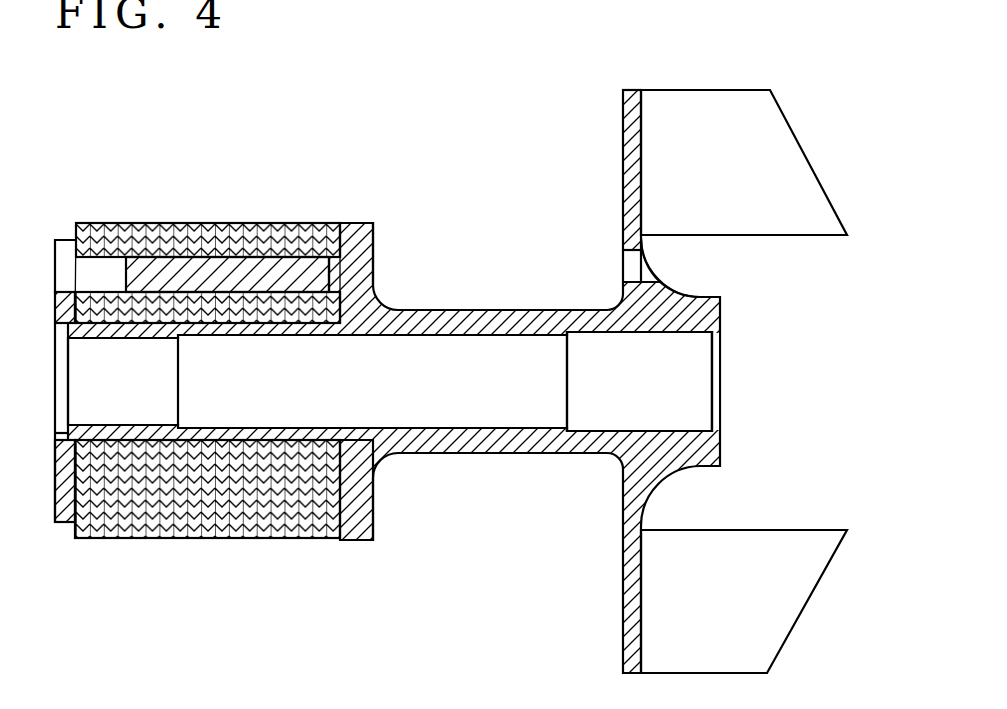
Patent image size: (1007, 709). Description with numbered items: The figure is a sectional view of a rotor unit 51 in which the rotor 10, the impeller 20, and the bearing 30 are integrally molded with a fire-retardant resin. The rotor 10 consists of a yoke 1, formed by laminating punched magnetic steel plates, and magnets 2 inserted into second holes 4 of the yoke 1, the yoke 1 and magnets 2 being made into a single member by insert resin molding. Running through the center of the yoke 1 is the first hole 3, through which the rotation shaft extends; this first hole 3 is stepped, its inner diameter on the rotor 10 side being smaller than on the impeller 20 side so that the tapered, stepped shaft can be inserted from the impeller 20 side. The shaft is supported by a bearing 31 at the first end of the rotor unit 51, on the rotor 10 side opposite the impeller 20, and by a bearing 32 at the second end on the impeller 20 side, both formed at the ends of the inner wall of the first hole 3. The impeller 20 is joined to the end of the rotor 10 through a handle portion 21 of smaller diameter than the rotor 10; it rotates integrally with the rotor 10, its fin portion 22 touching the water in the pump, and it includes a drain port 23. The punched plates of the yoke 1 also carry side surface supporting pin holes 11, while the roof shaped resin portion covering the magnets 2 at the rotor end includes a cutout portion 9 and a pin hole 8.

The yoke 1 is at (123, 223).
The magnet 2 is at (232, 270).
The first hole 3 is at (487, 422).
The second hole 4 is at (178, 258).
The pin hole 8 is at (66, 522).
The cutout portion 9 is at (73, 267).
The rotor 10 is at (355, 223).
The side surface supporting pin hole 11 is at (253, 538).
The impeller 20 is at (580, 174).
The handle portion 21 is at (478, 310).
The fin portion 22 is at (778, 147).
The drain port 23 is at (644, 268).
The bearing 30 is at (639, 381).
The bearing 31 is at (128, 423).
The bearing 32 is at (683, 333).
The rotor unit 51 is at (158, 180).